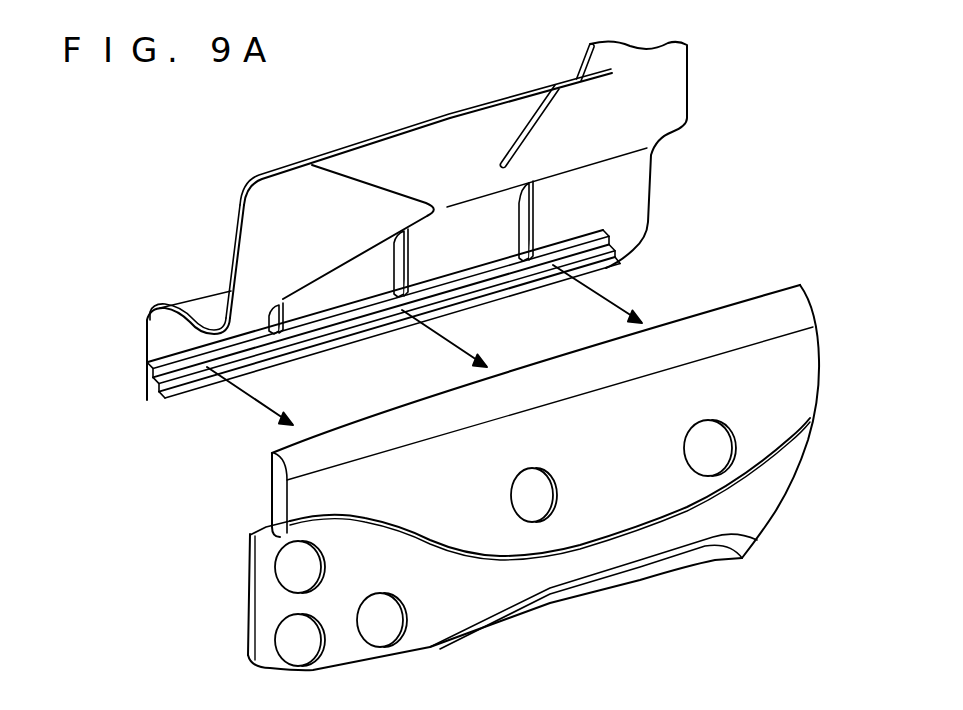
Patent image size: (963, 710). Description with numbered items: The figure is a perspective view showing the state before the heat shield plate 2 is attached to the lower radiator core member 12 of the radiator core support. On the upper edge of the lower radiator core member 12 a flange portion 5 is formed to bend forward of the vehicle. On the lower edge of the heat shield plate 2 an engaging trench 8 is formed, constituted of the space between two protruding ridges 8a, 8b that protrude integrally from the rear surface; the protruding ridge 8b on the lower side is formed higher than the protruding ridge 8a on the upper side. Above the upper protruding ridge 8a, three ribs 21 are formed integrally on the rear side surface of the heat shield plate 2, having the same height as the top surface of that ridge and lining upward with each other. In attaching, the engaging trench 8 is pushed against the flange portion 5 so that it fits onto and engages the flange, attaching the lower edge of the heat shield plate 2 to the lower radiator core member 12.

The heat shield plate 2 is at (688, 83).
The ribs 21 is at (285, 305).
The engaging trench 8 is at (391, 307).
The protruding ridge 8a is at (160, 361).
The protruding ridge 8b is at (156, 393).
The lower radiator core member 12 is at (543, 477).
The flange portion 5 is at (273, 478).